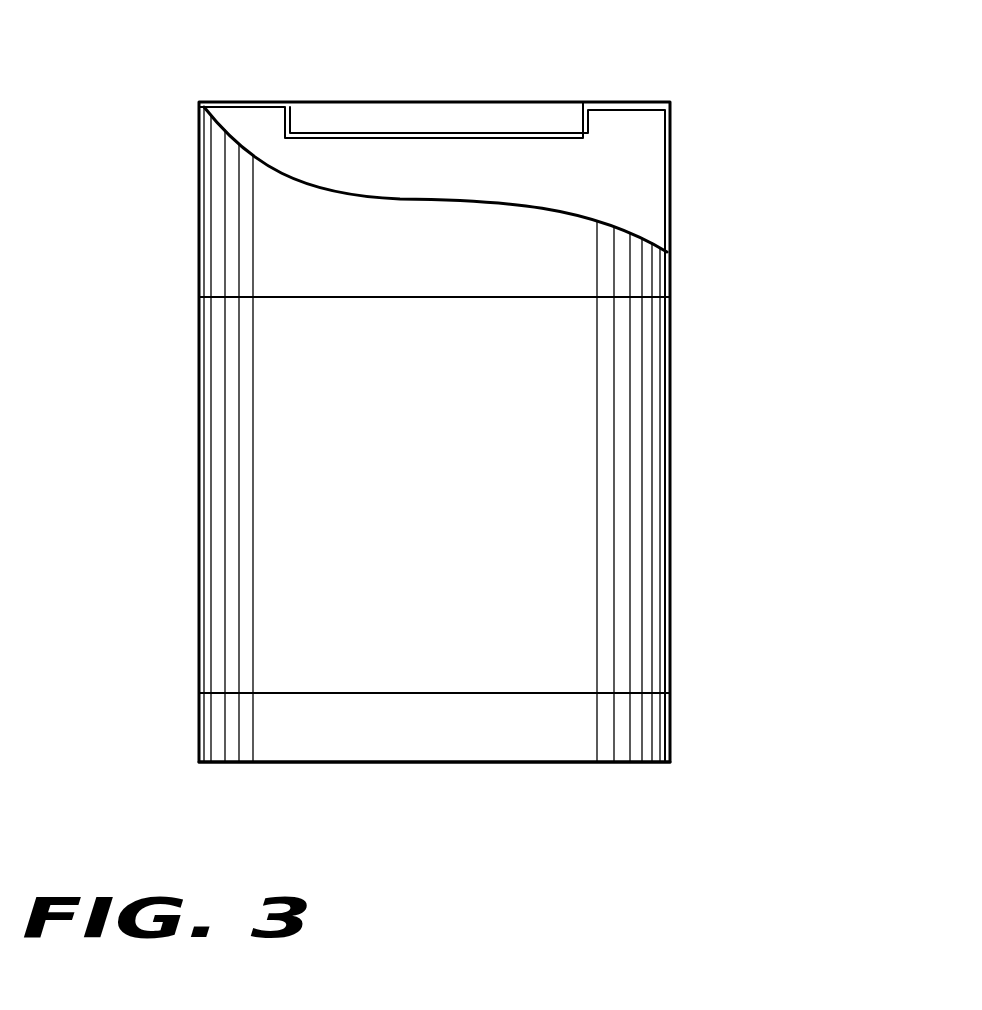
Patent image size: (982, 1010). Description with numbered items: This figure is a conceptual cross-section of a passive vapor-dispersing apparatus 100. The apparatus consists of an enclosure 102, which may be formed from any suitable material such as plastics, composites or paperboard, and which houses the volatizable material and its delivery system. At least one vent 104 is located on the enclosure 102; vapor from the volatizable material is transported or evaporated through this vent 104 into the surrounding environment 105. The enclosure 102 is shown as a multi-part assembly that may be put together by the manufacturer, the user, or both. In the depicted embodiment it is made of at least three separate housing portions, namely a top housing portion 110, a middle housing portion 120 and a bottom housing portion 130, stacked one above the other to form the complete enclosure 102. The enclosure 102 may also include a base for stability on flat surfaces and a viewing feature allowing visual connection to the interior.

The passive vapor-dispersing apparatus 100 is at (433, 817).
The enclosure 102 is at (673, 436).
The vent 104 is at (525, 75).
The environment 105 is at (887, 278).
The top housing portion 110 is at (210, 211).
The middle housing portion 120 is at (212, 492).
The bottom housing portion 130 is at (211, 725).